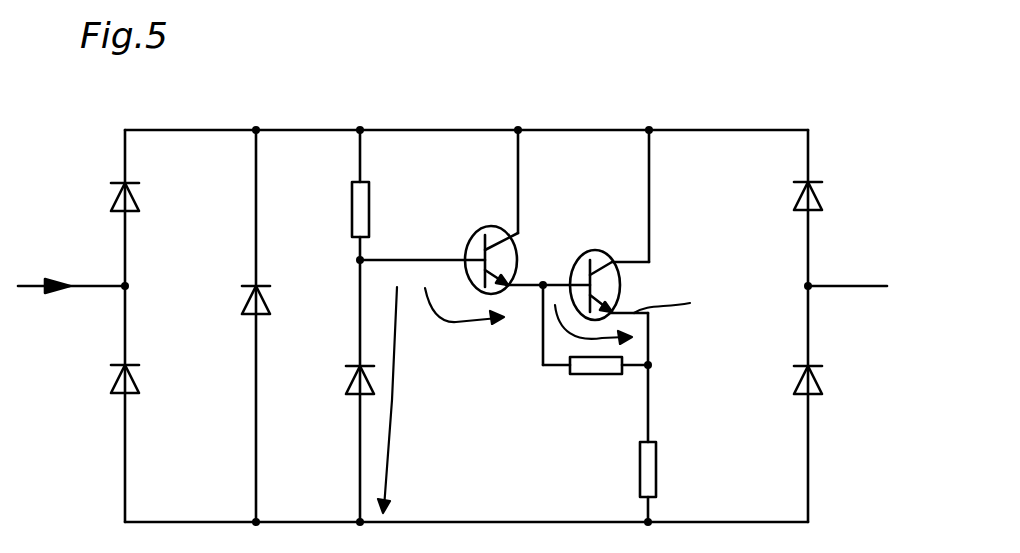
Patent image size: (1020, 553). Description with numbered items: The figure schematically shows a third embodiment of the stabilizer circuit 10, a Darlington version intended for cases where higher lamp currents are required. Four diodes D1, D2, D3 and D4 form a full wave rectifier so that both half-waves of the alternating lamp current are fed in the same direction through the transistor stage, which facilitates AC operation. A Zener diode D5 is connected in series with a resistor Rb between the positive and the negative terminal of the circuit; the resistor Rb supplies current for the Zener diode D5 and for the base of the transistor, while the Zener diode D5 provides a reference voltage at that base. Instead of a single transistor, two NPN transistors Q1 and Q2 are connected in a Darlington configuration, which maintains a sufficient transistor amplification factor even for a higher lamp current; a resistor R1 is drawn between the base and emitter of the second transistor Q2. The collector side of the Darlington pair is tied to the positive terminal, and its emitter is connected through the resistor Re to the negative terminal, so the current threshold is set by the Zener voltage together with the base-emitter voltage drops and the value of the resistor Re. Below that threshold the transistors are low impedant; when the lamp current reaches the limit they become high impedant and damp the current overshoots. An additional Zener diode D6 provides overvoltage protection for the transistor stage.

The stabilizer circuit 10 is at (692, 108).
The diode D1 is at (106, 197).
The diode D2 is at (106, 379).
The diode D3 is at (789, 196).
The diode D4 is at (789, 380).
The Zener diode D5 is at (341, 380).
The Zener diode D6 is at (237, 326).
The bipolar NPN transistor Q1 is at (475, 220).
The transistor Q2 is at (609, 247).
The resistor Rb is at (380, 326).
The resistor R1 is at (595, 352).
The resistor Re is at (667, 443).